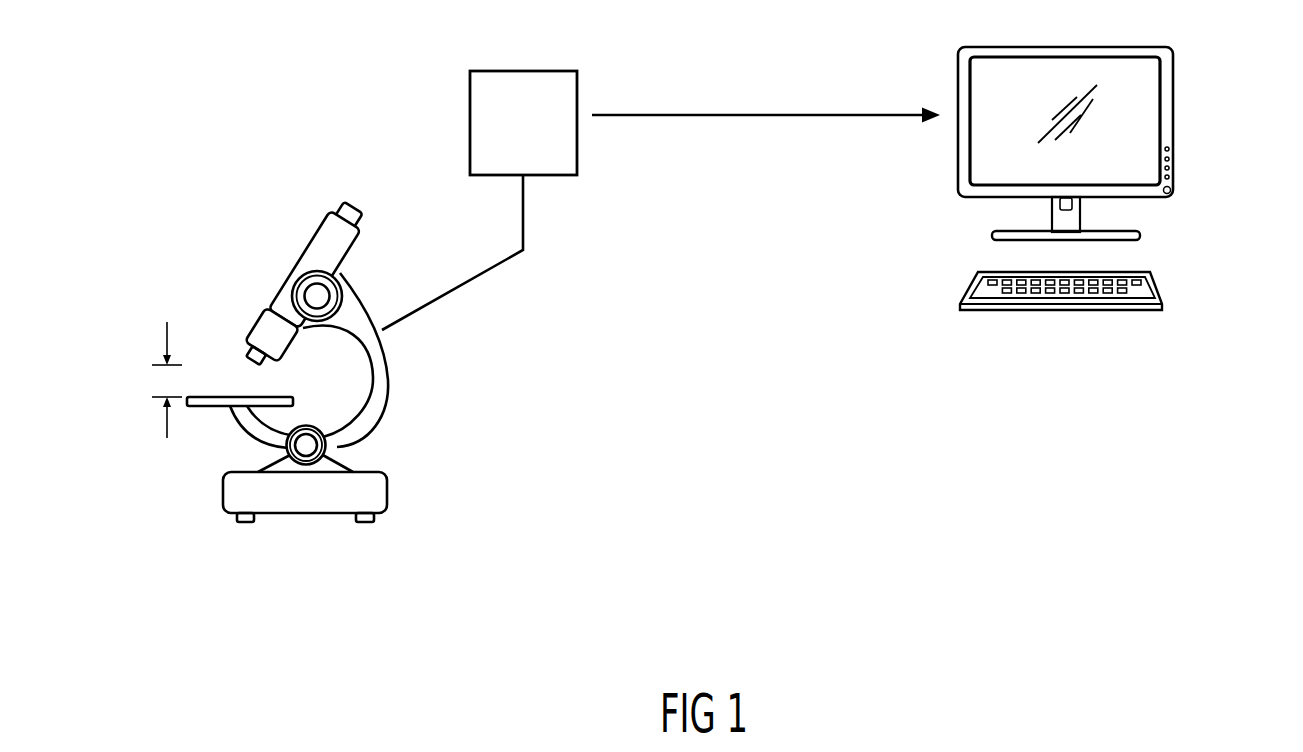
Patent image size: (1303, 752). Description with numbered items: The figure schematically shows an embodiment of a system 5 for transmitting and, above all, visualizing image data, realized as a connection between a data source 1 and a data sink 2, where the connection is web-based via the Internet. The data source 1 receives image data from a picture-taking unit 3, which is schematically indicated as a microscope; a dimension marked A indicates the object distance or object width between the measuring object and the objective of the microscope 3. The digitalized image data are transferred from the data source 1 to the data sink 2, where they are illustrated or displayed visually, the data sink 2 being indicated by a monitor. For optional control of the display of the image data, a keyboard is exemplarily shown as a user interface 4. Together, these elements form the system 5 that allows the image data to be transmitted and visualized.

The data source 1 is at (514, 137).
The data sink 2 is at (1192, 110).
The picture-taking unit 3 is at (423, 405).
The user interface 4 is at (1173, 290).
The system 5 is at (808, 418).
The object distance A is at (145, 380).